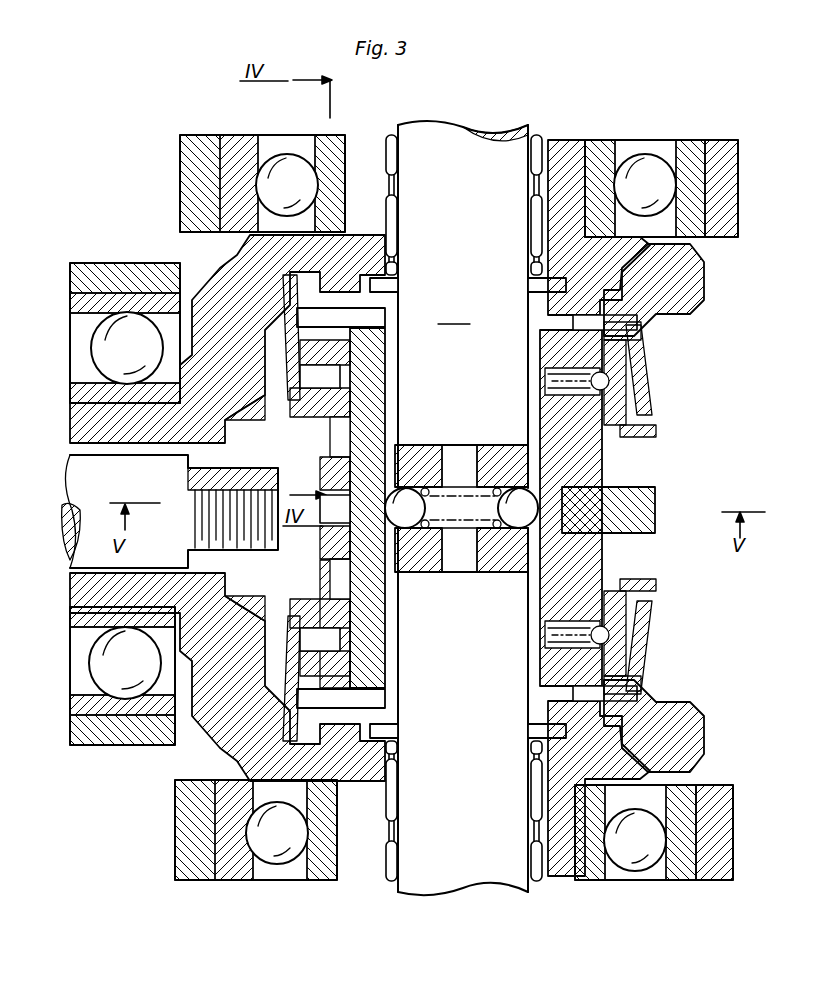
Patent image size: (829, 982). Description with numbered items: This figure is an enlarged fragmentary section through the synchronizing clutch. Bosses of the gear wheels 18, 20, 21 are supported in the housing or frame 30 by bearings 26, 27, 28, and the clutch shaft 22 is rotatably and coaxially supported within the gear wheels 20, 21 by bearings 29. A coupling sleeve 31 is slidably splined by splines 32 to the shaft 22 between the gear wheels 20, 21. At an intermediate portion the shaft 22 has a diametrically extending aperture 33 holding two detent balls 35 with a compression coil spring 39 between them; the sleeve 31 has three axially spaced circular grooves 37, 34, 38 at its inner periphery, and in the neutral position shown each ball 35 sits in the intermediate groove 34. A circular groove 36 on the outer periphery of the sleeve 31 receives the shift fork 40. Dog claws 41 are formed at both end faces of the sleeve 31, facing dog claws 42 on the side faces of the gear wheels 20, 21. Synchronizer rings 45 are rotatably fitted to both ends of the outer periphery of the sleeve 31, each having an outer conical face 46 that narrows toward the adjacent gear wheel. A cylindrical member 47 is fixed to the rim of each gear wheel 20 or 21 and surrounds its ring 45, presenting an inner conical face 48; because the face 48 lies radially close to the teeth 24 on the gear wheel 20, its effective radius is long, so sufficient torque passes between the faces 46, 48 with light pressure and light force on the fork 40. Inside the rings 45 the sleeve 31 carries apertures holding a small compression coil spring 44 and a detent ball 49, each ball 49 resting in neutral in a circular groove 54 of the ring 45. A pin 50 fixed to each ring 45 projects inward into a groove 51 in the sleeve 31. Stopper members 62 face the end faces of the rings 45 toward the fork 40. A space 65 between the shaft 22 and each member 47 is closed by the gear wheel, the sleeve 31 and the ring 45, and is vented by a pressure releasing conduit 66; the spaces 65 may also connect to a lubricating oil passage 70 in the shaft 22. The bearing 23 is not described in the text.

The gear wheel 18 is at (128, 432).
The gear wheel 20 is at (570, 262).
The gear wheel 21 is at (545, 762).
The clutch shaft 22 is at (454, 313).
The ball bearing 23 is at (656, 510).
The teeth 24 is at (705, 277).
The bearing 26 is at (95, 350).
The bearing 27 is at (287, 160).
The bearing 28 is at (278, 864).
The bearings 29 is at (395, 212).
The housing or frame 30 is at (185, 190).
The coupling sleeve 31 is at (605, 548).
The splines 32 is at (545, 662).
The aperture 33 is at (455, 560).
The intermediate circular groove 34 is at (410, 488).
The detent ball 35 is at (516, 488).
The circular groove 36 is at (360, 510).
The circular groove 37 is at (380, 440).
The circular groove 38 is at (388, 590).
The compression coil spring 39 is at (497, 530).
The shift fork 40 is at (650, 517).
The dog claws 41 is at (545, 342).
The dog claws 42 is at (575, 330).
The compression coil spring 44 is at (545, 380).
The synchronizer ring 45 is at (640, 418).
The conical face 46 is at (650, 390).
The cylindrical member 47 is at (600, 337).
The conical face 48 is at (640, 355).
The detent ball 49 is at (566, 414).
The pin 50 is at (340, 372).
The groove 51 is at (330, 432).
The circular groove 54 is at (640, 380).
The stopper member 62 is at (655, 437).
The space 65 is at (650, 310).
The pressure releasing conduit 66 is at (665, 256).
The passage 70 is at (445, 560).